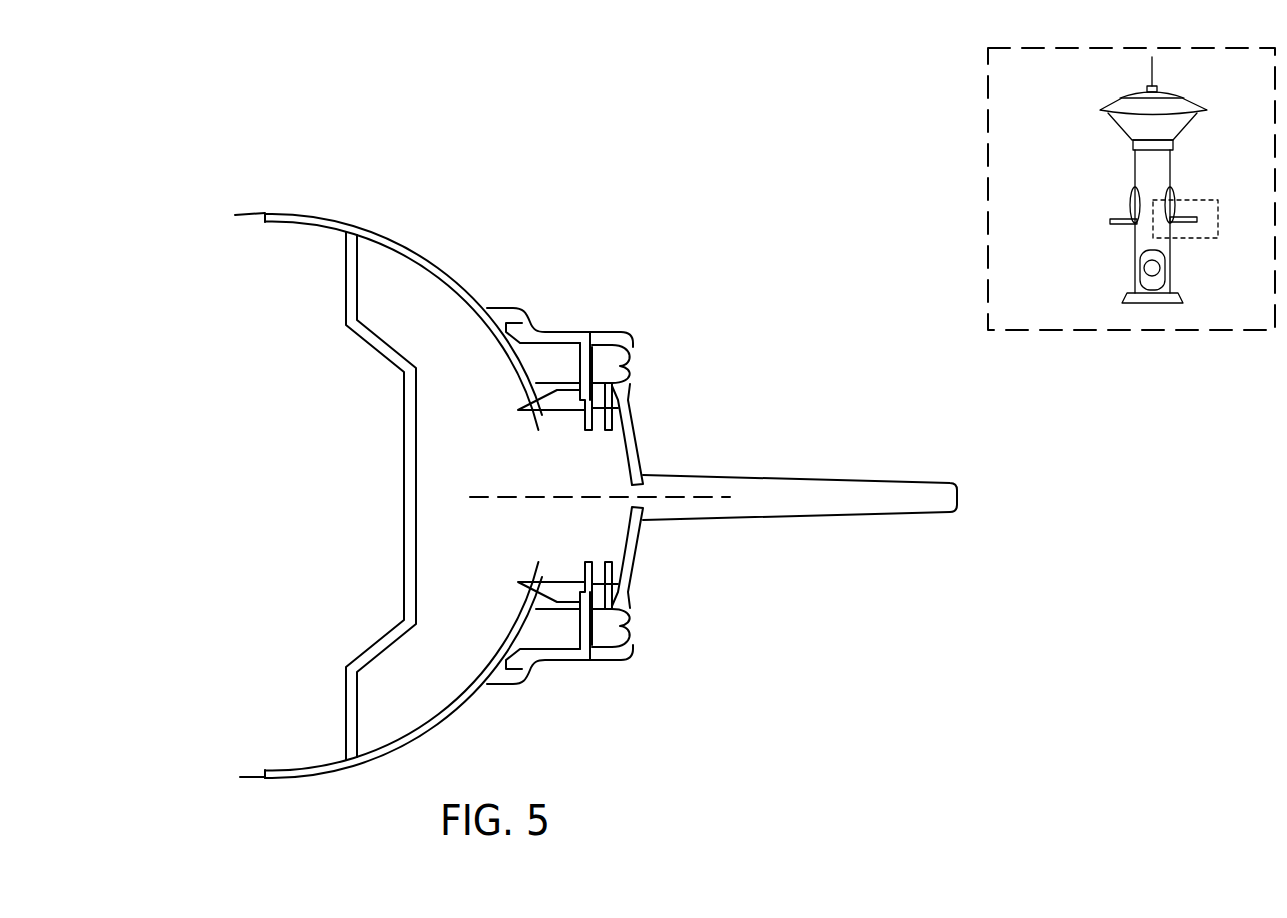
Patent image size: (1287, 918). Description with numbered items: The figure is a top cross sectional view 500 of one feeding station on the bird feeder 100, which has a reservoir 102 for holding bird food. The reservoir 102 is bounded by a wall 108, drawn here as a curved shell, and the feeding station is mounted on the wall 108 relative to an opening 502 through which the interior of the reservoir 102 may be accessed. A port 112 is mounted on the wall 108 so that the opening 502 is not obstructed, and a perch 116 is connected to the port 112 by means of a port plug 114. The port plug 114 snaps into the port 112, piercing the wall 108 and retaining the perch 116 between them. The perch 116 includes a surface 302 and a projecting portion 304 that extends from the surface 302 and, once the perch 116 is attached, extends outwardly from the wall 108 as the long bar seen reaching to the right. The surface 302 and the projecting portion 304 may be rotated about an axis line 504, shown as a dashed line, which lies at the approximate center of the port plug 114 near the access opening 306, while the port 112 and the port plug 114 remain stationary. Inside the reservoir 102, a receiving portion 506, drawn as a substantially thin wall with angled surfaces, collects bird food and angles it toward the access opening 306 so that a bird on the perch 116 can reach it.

The bird feeder 100 is at (1078, 151).
The reservoir 102 is at (250, 297).
The wall 108 is at (235, 215).
The port 112 is at (567, 332).
The port plug 114 is at (643, 535).
The perch 116 is at (670, 416).
The surface 302 is at (637, 350).
The projecting portion 304 is at (865, 515).
The access opening 306 is at (600, 481).
The top cross sectional view 500 is at (724, 366).
The opening 502 is at (528, 546).
The axis line 504 is at (470, 497).
The receiving portion 506 is at (405, 606).